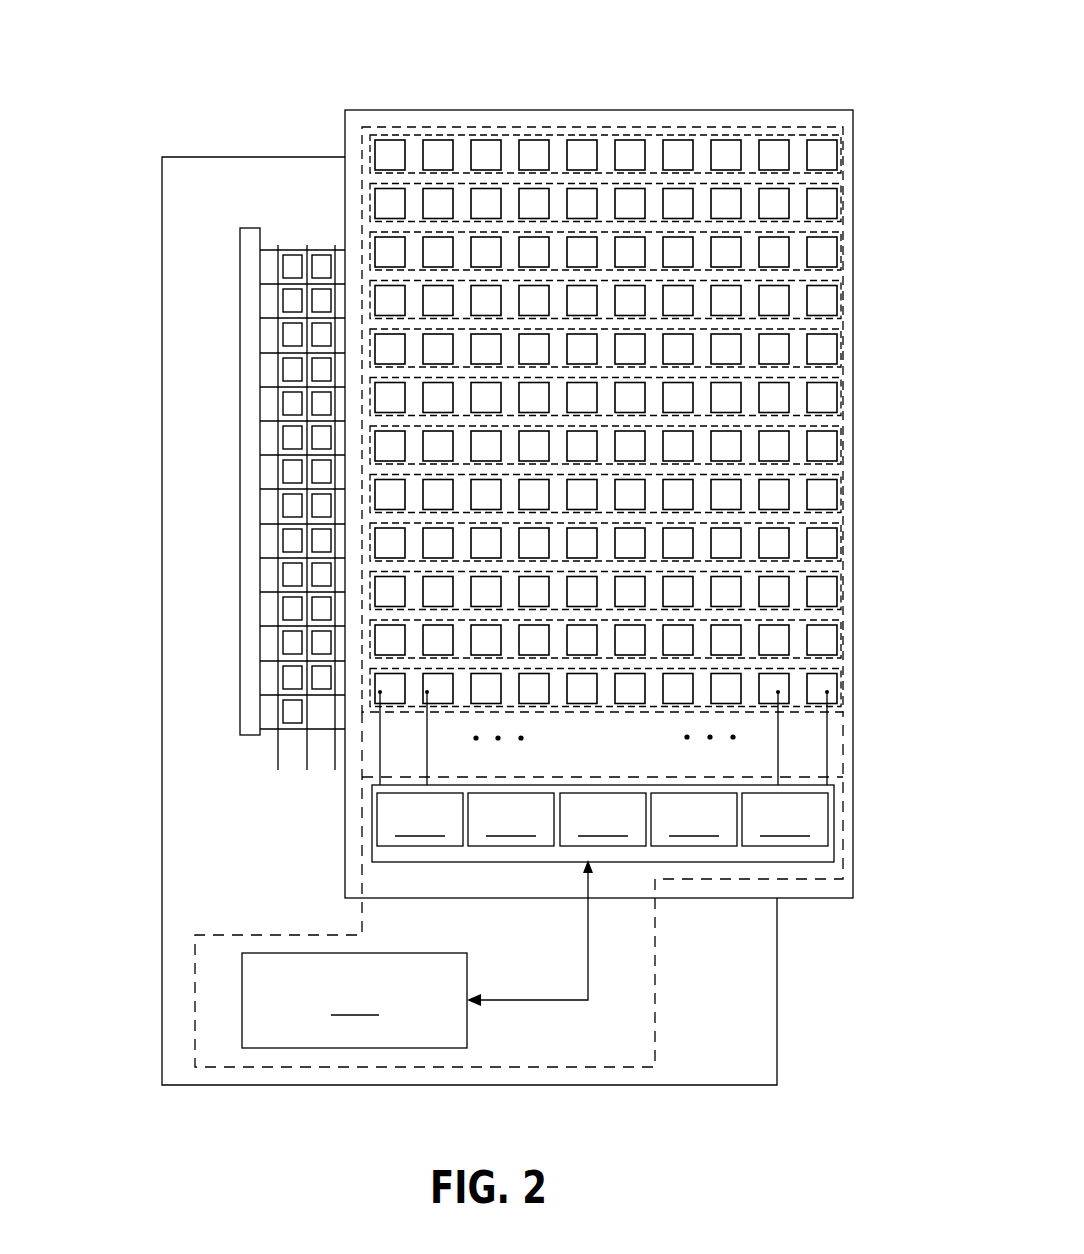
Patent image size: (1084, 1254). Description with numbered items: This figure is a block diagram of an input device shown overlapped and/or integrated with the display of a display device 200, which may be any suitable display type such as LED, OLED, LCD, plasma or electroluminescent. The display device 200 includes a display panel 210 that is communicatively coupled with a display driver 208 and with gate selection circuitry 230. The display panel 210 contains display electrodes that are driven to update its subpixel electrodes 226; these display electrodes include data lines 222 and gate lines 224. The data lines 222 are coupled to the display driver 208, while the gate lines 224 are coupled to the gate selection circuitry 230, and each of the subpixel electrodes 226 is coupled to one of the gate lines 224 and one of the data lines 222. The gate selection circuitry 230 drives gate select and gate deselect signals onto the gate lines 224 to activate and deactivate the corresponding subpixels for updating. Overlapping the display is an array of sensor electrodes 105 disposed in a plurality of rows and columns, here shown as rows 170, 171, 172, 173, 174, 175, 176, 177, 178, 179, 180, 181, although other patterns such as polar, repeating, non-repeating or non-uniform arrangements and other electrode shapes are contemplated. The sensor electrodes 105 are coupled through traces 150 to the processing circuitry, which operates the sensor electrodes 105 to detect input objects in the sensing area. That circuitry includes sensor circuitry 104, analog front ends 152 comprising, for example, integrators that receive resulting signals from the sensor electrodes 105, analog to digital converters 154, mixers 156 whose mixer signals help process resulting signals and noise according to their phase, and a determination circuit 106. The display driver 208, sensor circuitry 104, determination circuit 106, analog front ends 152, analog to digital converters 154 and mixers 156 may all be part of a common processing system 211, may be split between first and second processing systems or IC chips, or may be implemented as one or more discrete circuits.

The display device 200 is at (125, 122).
The display panel 210 is at (205, 157).
The sensor electrodes 105 is at (500, 127).
The row 170 is at (838, 155).
The row 171 is at (838, 204).
The row 172 is at (838, 252).
The row 173 is at (838, 300).
The row 174 is at (838, 349).
The row 175 is at (838, 398).
The row 176 is at (838, 446).
The row 177 is at (838, 494).
The row 178 is at (838, 543).
The row 179 is at (838, 592).
The row 180 is at (838, 640).
The row 181 is at (838, 688).
The traces 150 is at (828, 740).
The processing system 211 is at (843, 820).
The sensor circuitry 104 is at (420, 819).
The analog front ends 152 is at (511, 819).
The analog to digital converters 154 is at (603, 819).
The mixers 156 is at (694, 819).
The determination circuit 106 is at (785, 819).
The display driver 208 is at (417, 954).
The gate selection circuitry 230 is at (250, 310).
The gate lines 224 is at (266, 262).
The data lines 222 is at (280, 252).
The subpixel electrodes 226 is at (289, 258).